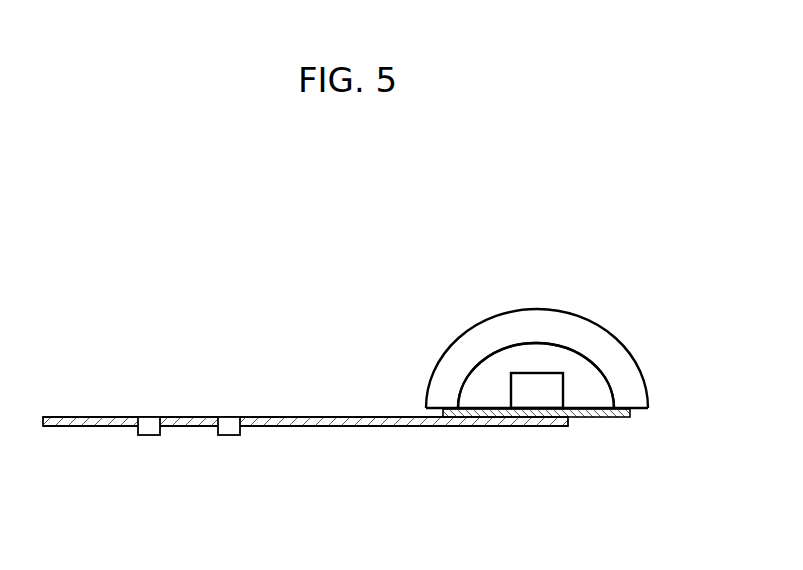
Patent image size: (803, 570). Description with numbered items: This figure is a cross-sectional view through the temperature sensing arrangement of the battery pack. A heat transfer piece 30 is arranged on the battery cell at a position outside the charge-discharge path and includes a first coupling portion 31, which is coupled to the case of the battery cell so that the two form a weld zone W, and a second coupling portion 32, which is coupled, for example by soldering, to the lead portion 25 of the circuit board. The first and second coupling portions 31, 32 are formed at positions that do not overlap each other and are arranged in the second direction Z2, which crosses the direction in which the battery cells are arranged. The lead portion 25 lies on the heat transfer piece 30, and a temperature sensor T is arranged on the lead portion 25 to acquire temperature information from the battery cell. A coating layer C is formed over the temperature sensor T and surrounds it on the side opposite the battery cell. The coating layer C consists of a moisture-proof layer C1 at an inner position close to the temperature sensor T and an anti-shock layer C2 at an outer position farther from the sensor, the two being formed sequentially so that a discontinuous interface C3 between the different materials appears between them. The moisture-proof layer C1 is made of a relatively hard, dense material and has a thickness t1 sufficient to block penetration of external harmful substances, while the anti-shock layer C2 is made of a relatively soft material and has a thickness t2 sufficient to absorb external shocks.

The weld zone W is at (147, 435).
The first coupling portion 31 is at (190, 427).
The second coupling portion 32 is at (247, 524).
The heat transfer piece 30 is at (305, 493).
The temperature sensor T is at (535, 395).
The lead portion 25 is at (612, 418).
The coating layer C is at (589, 322).
The moisture-proof layer C1 is at (577, 363).
The anti-shock layer C2 is at (625, 378).
The discontinuous interface C3 is at (558, 347).
The second direction Z2 is at (408, 240).
The thickness of moisture-proof layer t1 is at (530, 342).
The thickness of anti-shock layer t2 is at (530, 308).